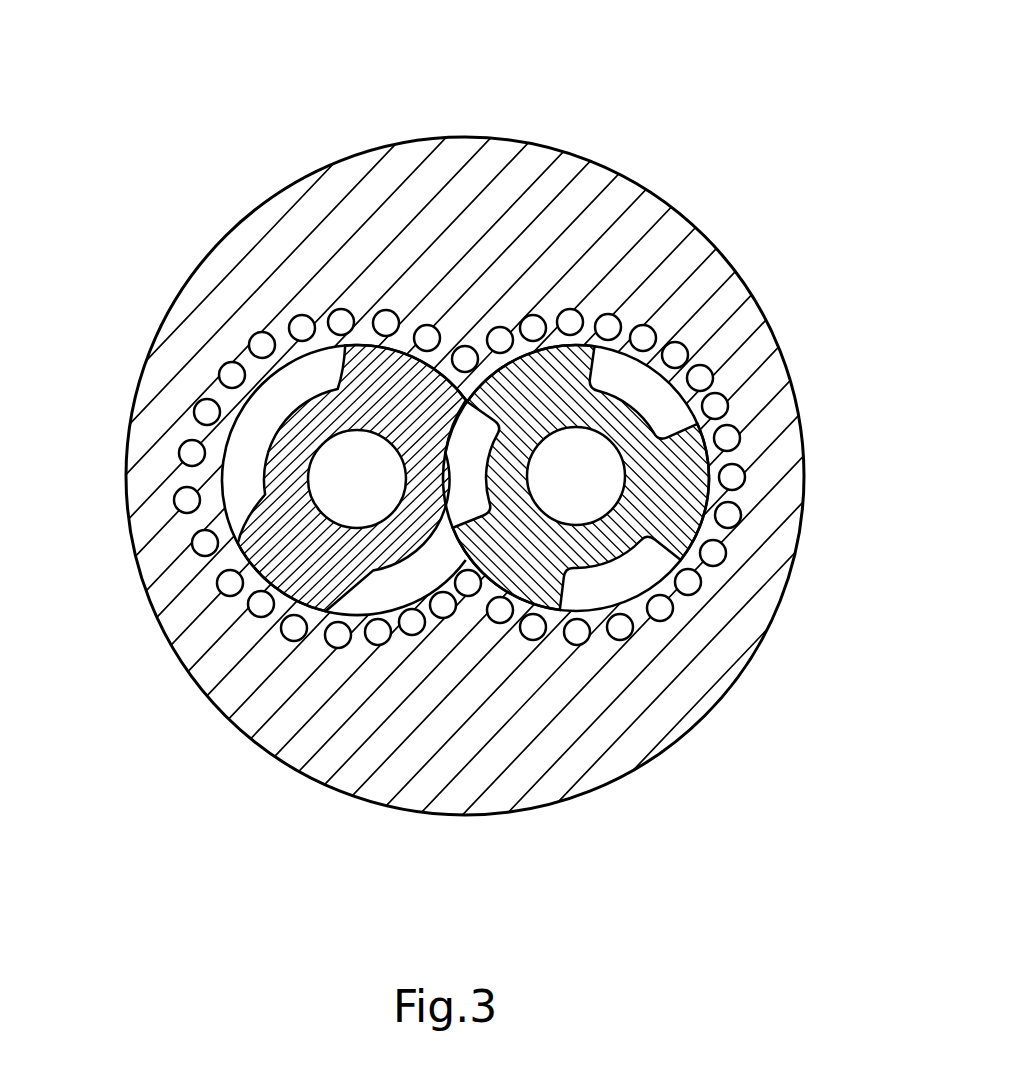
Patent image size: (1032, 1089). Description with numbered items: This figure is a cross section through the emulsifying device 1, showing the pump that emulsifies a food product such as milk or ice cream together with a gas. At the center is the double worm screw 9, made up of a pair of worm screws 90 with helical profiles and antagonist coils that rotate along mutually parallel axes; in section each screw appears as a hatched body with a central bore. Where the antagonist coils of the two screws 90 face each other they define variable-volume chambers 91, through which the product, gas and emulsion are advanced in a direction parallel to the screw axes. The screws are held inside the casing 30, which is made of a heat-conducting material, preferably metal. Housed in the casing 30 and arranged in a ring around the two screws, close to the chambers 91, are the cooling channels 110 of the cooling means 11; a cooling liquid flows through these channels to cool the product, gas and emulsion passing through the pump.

The device for emulsifying liquid or solid products 1 is at (230, 133).
The casing 30 is at (318, 210).
The double worm screw 9 is at (470, 312).
The cooling means 11 is at (592, 298).
The worm screws 90 is at (290, 455).
The variable-volume chambers 91 is at (413, 572).
The cooling channels 110 is at (728, 437).